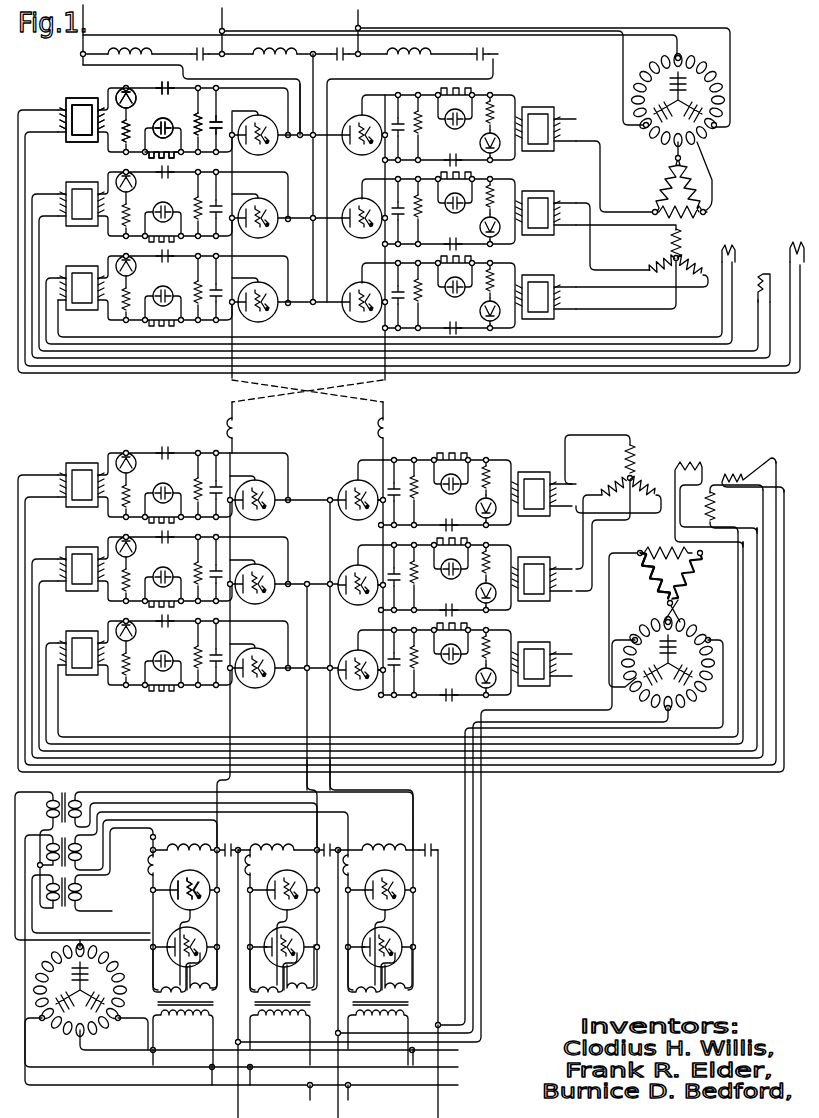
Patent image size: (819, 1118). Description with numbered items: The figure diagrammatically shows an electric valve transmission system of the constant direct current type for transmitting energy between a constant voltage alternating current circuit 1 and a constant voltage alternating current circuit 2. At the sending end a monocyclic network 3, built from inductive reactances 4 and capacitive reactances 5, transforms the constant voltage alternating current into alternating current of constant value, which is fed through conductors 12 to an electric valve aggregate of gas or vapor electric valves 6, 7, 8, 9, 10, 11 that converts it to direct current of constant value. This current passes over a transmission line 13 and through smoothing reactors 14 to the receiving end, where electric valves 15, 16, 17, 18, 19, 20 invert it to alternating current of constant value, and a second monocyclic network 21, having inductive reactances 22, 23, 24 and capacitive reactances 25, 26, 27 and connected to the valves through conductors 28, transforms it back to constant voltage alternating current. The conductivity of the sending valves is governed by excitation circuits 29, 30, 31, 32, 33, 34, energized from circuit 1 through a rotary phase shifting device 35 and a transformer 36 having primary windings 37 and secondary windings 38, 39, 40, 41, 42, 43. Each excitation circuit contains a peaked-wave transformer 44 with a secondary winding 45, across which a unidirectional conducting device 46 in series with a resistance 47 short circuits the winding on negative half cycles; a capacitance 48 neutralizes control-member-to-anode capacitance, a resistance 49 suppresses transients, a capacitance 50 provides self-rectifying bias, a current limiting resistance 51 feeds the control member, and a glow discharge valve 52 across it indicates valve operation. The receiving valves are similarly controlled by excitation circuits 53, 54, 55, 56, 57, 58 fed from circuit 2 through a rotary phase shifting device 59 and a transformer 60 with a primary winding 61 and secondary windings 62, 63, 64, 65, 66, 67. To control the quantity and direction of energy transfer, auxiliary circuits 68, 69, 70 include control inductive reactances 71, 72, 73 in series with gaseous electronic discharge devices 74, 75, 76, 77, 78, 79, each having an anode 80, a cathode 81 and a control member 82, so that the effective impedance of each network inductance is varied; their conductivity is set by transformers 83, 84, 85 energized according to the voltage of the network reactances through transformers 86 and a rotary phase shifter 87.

The constant voltage alternating current circuit 1 is at (356, 18).
The constant voltage alternating current circuit 2 is at (434, 1106).
The monocyclic network 3 is at (39, 66).
The inductive reactances 4 is at (430, 51).
The capacitive reactances 5 is at (496, 52).
The electric valve 6 is at (277, 147).
The electric valve 7 is at (277, 230).
The electric valve 8 is at (277, 314).
The electric valve 9 is at (352, 149).
The electric valve 10 is at (352, 233).
The electric valve 11 is at (352, 318).
The conductors 12 is at (307, 105).
The transmission line 13 is at (360, 399).
The smoothing reactors 14 is at (389, 429).
The electric valve 15 is at (274, 514).
The electric valve 16 is at (274, 598).
The electric valve 17 is at (257, 687).
The electric valve 18 is at (349, 516).
The electric valve 19 is at (349, 602).
The electric valve 20 is at (348, 687).
The monocyclic network 21 is at (466, 877).
The inductive reactance 22 is at (152, 849).
The inductive reactance 23 is at (289, 842).
The inductive reactance 24 is at (384, 842).
The capacitive reactance 25 is at (244, 842).
The capacitive reactance 26 is at (340, 840).
The capacitive reactance 27 is at (438, 842).
The conductors 28 is at (330, 778).
The excitation circuit 29 is at (167, 117).
The excitation circuit 30 is at (167, 201).
The excitation circuit 31 is at (167, 285).
The excitation circuit 32 is at (459, 148).
The excitation circuit 33 is at (459, 232).
The excitation circuit 34 is at (459, 316).
The rotary phase shifting device 35 is at (758, 96).
The transformer 36 is at (747, 220).
The primary windings 37 is at (692, 216).
The secondary winding 38 is at (670, 242).
The secondary winding 39 is at (651, 268).
The secondary winding 40 is at (691, 260).
The secondary winding 41 is at (730, 248).
The secondary winding 42 is at (783, 246).
The secondary winding 43 is at (758, 297).
The transformer 44 is at (65, 100).
The secondary winding 45 is at (84, 102).
The unidirectional conducting device 46 is at (132, 100).
The resistance 47 is at (122, 127).
The capacitance 48 is at (217, 116).
The resistance 49 is at (199, 113).
The capacitance 50 is at (167, 91).
The current limiting resistance 51 is at (152, 158).
The glow discharge valve 52 is at (169, 120).
The excitation circuit 53 is at (163, 476).
The excitation circuit 54 is at (163, 560).
The excitation circuit 55 is at (163, 644).
The excitation circuit 56 is at (455, 514).
The excitation circuit 57 is at (455, 599).
The excitation circuit 58 is at (455, 684).
The rotary phase shifting device 59 is at (638, 624).
The transformer 60 is at (643, 538).
The primary winding 61 is at (648, 581).
The secondary winding 62 is at (607, 488).
The secondary winding 63 is at (634, 450).
The secondary winding 64 is at (651, 483).
The secondary winding 65 is at (693, 468).
The secondary winding 66 is at (737, 466).
The secondary winding 67 is at (715, 507).
The auxiliary circuit 68 is at (191, 870).
The auxiliary circuit 69 is at (289, 872).
The auxiliary circuit 70 is at (387, 872).
The inductive reactance 71 is at (148, 869).
The inductive reactance 72 is at (245, 872).
The inductive reactance 73 is at (343, 872).
The electronic discharge device 74 is at (195, 909).
The electronic discharge device 75 is at (195, 966).
The electronic discharge device 76 is at (292, 909).
The electronic discharge device 77 is at (292, 966).
The electronic discharge device 78 is at (392, 909).
The electronic discharge device 79 is at (392, 966).
The anode 80 is at (202, 883).
The cathode 81 is at (176, 894).
The control member 82 is at (183, 902).
The transformer 83 is at (214, 998).
The transformer 84 is at (312, 998).
The transformer 85 is at (410, 998).
The transformers 86 is at (65, 919).
The rotary phase shifter 87 is at (131, 968).